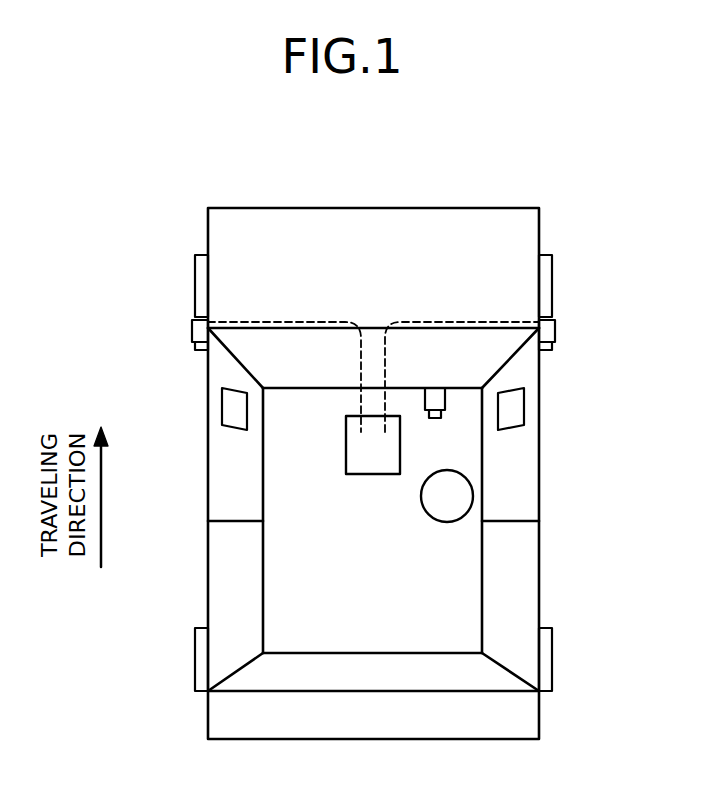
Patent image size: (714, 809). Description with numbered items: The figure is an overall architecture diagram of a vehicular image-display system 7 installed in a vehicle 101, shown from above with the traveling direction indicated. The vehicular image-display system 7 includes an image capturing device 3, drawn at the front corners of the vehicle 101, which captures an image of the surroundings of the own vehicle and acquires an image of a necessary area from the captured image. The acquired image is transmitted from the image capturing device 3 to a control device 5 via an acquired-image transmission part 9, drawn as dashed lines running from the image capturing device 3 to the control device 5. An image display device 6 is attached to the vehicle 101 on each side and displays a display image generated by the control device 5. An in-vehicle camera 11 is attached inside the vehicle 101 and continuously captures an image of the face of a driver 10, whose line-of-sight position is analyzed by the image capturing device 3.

The vehicle 101 is at (376, 217).
The vehicular image-display system 7 is at (469, 203).
The image capturing device 3 is at (200, 330).
The acquired-image transmission part 9 is at (281, 317).
The image display device 6 is at (233, 408).
The in-vehicle camera 11 is at (437, 388).
The control device 5 is at (380, 467).
The driver 10 is at (445, 503).